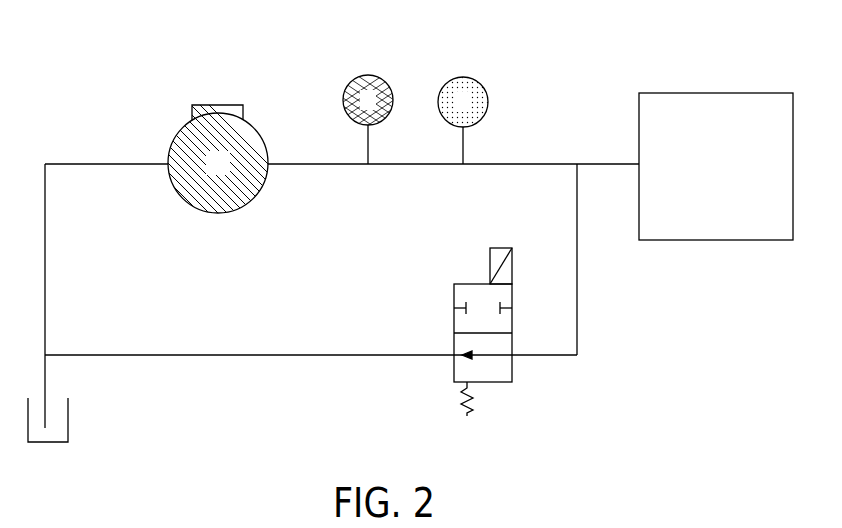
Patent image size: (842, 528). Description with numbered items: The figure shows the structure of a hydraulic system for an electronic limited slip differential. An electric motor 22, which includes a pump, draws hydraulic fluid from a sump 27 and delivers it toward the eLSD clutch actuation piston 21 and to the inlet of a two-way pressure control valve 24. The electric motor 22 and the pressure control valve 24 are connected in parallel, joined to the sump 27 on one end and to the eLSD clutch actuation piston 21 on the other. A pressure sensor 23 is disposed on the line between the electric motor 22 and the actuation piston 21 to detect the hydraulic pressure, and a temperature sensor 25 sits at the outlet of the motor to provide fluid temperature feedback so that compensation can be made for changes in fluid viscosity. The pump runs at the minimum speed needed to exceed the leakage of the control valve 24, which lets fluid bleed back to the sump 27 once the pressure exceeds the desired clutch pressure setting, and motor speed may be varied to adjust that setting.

The eLSD clutch actuation piston 21 is at (697, 242).
The electric motor 22 is at (178, 138).
The pressure sensor 23 is at (488, 99).
The 2-way pressure control valve 24 is at (512, 370).
The temperature sensor 25 is at (345, 117).
The sump 27 is at (68, 425).